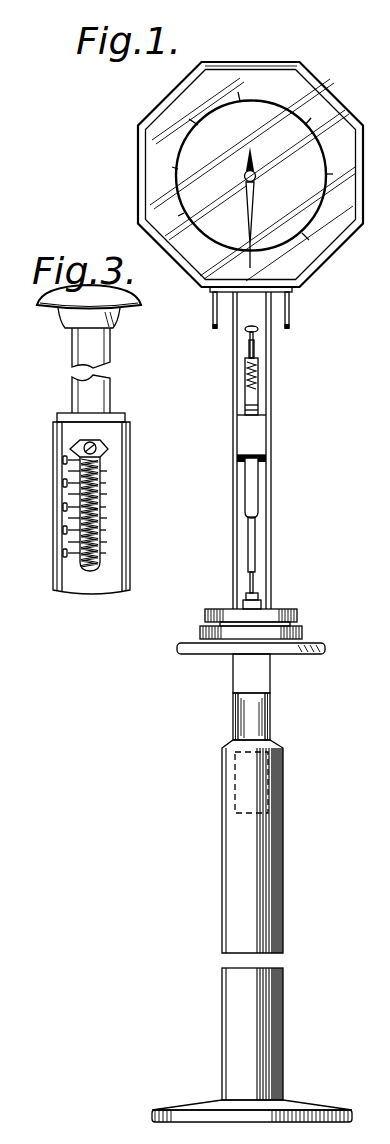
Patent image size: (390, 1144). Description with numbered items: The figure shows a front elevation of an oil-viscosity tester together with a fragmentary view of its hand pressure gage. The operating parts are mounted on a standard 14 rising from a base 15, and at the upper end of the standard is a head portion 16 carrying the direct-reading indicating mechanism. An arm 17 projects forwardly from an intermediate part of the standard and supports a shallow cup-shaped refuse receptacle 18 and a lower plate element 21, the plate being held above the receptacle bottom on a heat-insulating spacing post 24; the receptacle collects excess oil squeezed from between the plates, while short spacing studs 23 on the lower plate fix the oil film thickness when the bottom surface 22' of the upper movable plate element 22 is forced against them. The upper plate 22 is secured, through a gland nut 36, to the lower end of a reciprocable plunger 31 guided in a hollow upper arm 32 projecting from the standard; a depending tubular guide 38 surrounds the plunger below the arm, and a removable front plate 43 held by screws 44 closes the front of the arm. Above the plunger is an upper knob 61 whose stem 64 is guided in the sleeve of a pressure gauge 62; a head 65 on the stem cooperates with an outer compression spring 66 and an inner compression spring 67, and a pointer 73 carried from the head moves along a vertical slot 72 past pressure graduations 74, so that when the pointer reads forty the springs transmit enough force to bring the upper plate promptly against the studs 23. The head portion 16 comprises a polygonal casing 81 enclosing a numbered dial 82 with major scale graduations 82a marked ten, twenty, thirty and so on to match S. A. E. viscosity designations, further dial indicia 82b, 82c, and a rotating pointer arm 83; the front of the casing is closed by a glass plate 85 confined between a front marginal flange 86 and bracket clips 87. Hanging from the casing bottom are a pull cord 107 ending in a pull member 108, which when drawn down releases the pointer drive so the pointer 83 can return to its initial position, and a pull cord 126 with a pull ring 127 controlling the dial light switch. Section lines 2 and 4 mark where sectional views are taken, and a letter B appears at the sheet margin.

In FIG. 1, the section line 2- 2 is at (251, 318).
In FIG. 1, the section line 4- 4 is at (266, 28).
In FIG. 1, the standard 14 is at (222, 867).
In FIG. 1, the base 15 is at (190, 1108).
In FIG. 1, the head portion 16 is at (134, 218).
In FIG. 1, the arm 17 is at (235, 687).
In FIG. 1, the refuse receptacle 18 is at (180, 648).
In FIG. 1, the lower plate element 21 is at (200, 633).
In FIG. 1, the upper movable plate element 22 is at (220, 614).
In FIG. 1, the bottom surface of upper plate element 22' is at (324, 619).
In FIG. 1, the spacing studs 23 is at (229, 612).
In FIG. 1, the spacing post 24 is at (248, 650).
In FIG. 1, the reciprocable plunger 31 is at (256, 531).
In FIG. 1, the upper arm 32 is at (272, 436).
In FIG. 1, the gland nut 36 is at (258, 597).
In FIG. 1, the tubular guide 38 is at (253, 500).
In FIG. 1, the removable front plate 43 is at (246, 441).
In FIG. 1, the screws 44 is at (261, 408).
In FIG. 1, the upper knob 61 is at (245, 330).
In FIG. 3, the upper knob 61 is at (110, 295).
In FIG. 1, the pressure gauge 62 is at (259, 389).
In FIG. 3, the pressure gauge 62 is at (155, 498).
In FIG. 1, the stem 64 is at (250, 348).
In FIG. 3, the stem 64 is at (100, 356).
In FIG. 3, the head 65 is at (108, 459).
In FIG. 3, the outer compression spring 66 is at (108, 480).
In FIG. 3, the inner compression spring 67 is at (108, 502).
In FIG. 1, the vertical slot 72 is at (260, 378).
In FIG. 3, the vertical slot 72 is at (108, 523).
In FIG. 3, the pointer 73 is at (105, 445).
In FIG. 3, the pressure graduations 74 is at (120, 543).
In FIG. 1, the casing 81 is at (343, 101).
In FIG. 1, the numbered dial 82 is at (190, 101).
In FIG. 1, the major scale graduations 82a is at (182, 218).
In FIG. 1, the dial portion 82b is at (268, 247).
In FIG. 1, the start test marking 82c is at (212, 243).
In FIG. 1, the rotating pointer arm 83 is at (256, 201).
In FIG. 1, the glass plate 85 is at (335, 230).
In FIG. 1, the front marginal flange 86 is at (364, 152).
In FIG. 1, the bracket clips 87 is at (381, 575).
In FIG. 1, the pull cord 107 is at (292, 306).
In FIG. 1, the pull member 108 is at (292, 326).
In FIG. 1, the pull cord 126 is at (210, 309).
In FIG. 1, the pull ring 127 is at (213, 327).
In FIG. 1, the section B is at (383, 1099).